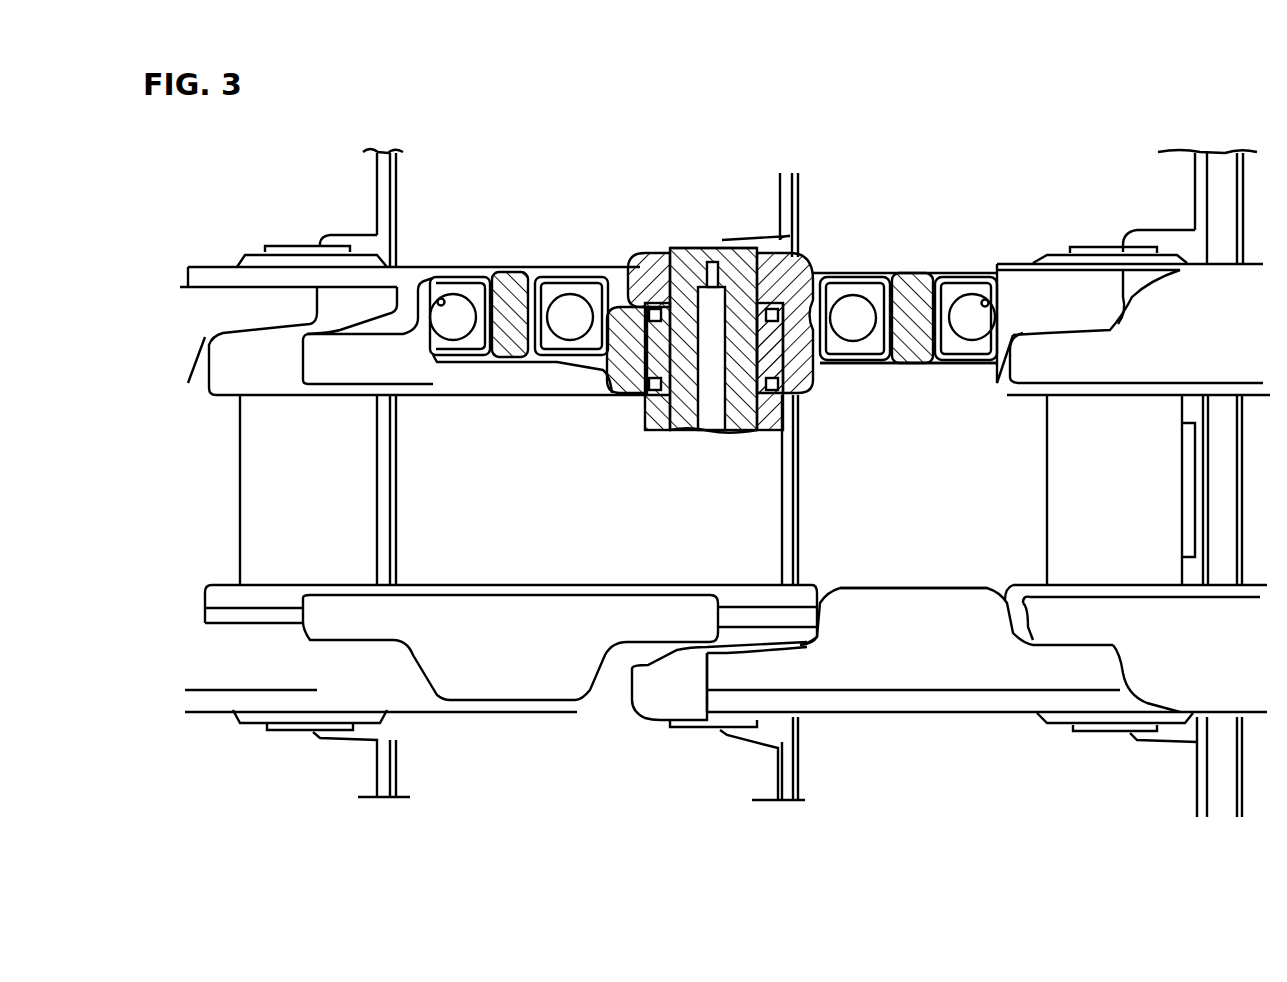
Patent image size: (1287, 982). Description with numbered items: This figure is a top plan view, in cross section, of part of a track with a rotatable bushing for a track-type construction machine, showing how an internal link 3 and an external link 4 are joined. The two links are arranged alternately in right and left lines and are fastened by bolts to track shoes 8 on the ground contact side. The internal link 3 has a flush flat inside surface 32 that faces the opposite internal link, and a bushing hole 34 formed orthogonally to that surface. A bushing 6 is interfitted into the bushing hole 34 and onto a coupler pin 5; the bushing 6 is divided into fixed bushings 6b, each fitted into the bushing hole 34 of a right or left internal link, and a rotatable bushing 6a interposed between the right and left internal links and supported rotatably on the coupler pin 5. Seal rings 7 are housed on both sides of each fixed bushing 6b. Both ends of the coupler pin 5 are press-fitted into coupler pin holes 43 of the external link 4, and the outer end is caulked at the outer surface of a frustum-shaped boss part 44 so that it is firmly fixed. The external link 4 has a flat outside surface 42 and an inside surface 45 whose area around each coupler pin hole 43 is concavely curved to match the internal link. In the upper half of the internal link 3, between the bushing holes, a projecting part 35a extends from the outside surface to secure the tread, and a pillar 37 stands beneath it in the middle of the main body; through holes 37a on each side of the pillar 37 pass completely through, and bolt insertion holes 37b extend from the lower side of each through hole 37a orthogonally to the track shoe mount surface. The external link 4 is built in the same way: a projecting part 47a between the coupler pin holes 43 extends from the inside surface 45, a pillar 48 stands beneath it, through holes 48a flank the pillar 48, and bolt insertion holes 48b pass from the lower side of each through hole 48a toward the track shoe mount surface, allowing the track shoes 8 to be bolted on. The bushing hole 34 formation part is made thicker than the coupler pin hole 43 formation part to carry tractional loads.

The internal link 3 is at (553, 395).
The external link 4 is at (812, 262).
The coupler pin 5 is at (737, 258).
The bushing 6 is at (372, 540).
The rotatable bushing 6a is at (764, 488).
The fixed bushing 6b is at (773, 360).
The seal ring 7 is at (778, 310).
The track shoe 8 is at (835, 778).
The inside surface 32 is at (426, 395).
The bushing hole 34 is at (618, 400).
The projecting part 35a is at (477, 670).
The pillar 37 is at (510, 283).
The through hole 37a is at (474, 295).
The bolt insertion hole 37b is at (441, 298).
The outside surface 42 is at (985, 265).
The coupler pin hole 43 is at (682, 262).
The boss part 44 is at (634, 276).
The inside surface 45 is at (878, 365).
The projecting part 47a is at (912, 602).
The pillar 48 is at (932, 305).
The through hole 48a is at (893, 300).
The bolt insertion hole 48b is at (990, 305).